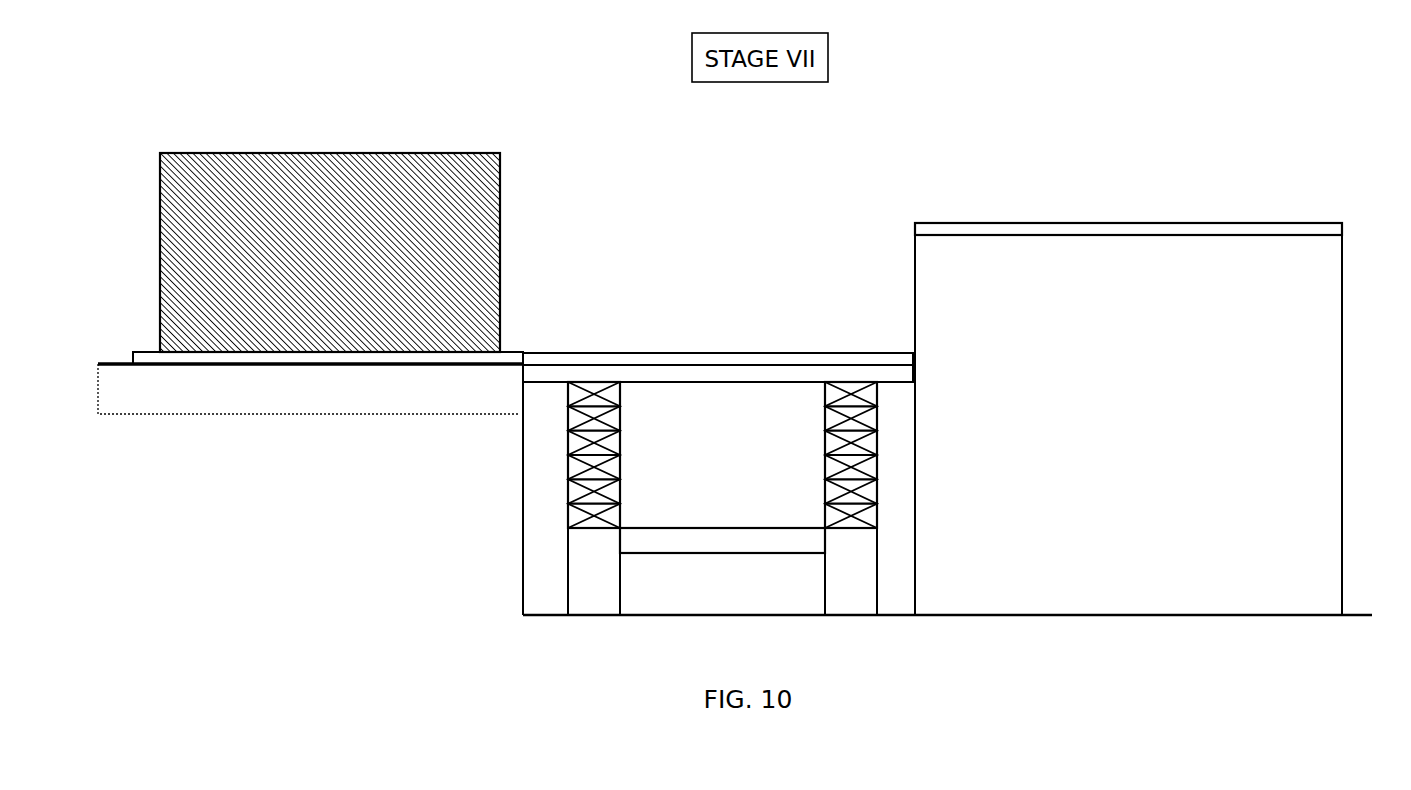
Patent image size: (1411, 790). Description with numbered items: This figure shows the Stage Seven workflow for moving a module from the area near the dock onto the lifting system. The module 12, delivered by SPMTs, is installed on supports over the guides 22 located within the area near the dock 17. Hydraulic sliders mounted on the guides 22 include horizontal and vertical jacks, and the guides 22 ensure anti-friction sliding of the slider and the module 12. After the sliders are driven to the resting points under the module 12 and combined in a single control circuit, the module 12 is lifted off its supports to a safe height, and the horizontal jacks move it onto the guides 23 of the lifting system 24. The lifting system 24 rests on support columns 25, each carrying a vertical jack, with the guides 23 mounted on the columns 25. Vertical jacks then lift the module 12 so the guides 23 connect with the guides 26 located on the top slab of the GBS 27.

The module 12 is at (347, 153).
The area near the dock 17 is at (310, 389).
The guides 22 is at (238, 368).
The guides of the lifting system 23 is at (688, 353).
The lifting system 24 is at (725, 553).
The support columns 25 is at (825, 492).
The guides on the top slab of the GBS 26 is at (1112, 223).
The GBS 27 is at (1317, 442).